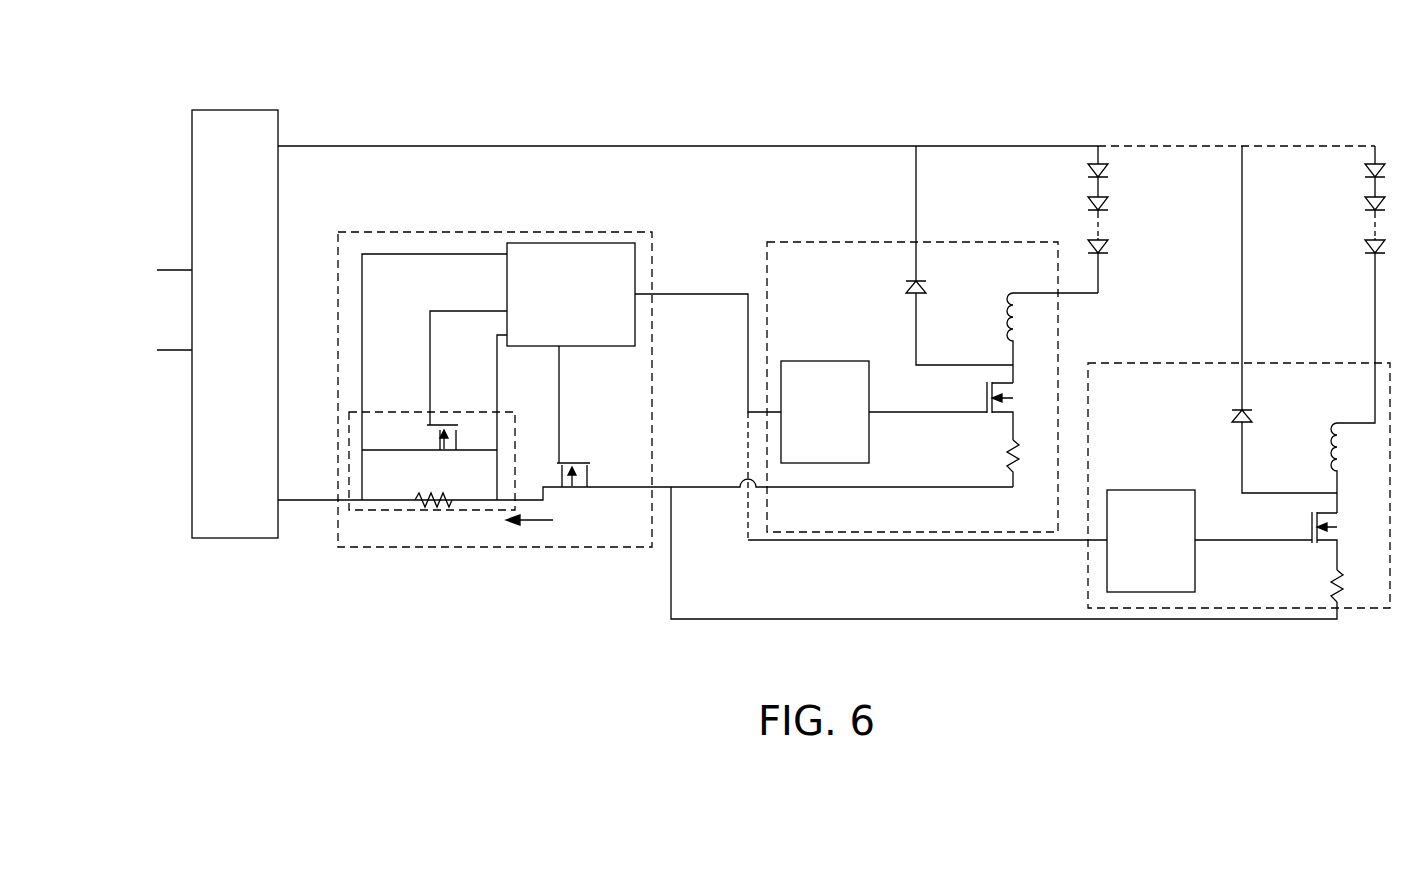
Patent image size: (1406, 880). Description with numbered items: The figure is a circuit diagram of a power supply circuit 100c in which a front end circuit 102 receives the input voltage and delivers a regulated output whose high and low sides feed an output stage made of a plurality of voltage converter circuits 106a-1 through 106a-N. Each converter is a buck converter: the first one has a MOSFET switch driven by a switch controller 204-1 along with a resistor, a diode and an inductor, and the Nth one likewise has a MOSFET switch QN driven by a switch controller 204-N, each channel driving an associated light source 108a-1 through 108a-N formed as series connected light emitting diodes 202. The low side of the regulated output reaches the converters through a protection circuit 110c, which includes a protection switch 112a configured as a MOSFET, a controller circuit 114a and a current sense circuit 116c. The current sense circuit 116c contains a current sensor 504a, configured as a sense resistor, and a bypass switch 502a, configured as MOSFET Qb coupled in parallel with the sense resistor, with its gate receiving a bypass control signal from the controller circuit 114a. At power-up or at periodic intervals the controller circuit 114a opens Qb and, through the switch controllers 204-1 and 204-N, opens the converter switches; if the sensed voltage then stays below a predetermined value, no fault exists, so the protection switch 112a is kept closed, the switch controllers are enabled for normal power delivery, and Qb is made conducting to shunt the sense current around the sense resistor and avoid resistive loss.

The power supply circuit 100c is at (618, 66).
The front end circuit 102 is at (236, 110).
The protection circuit 110c is at (470, 232).
The controller circuit 114a is at (572, 243).
The current sense circuit 116c is at (358, 514).
The bypass switch 502a is at (410, 473).
The current sensor 504a is at (428, 540).
The protection switch 112a is at (590, 522).
The voltage converter circuit 106a-1 is at (862, 242).
The voltage converter circuit 106a-N is at (1213, 363).
The switch controller 204-1 is at (805, 361).
The switch controller 204-N is at (1130, 490).
The light source 108a-1 is at (1046, 173).
The light source 108a-N is at (1313, 171).
The light emitting diode 202 is at (1105, 202).